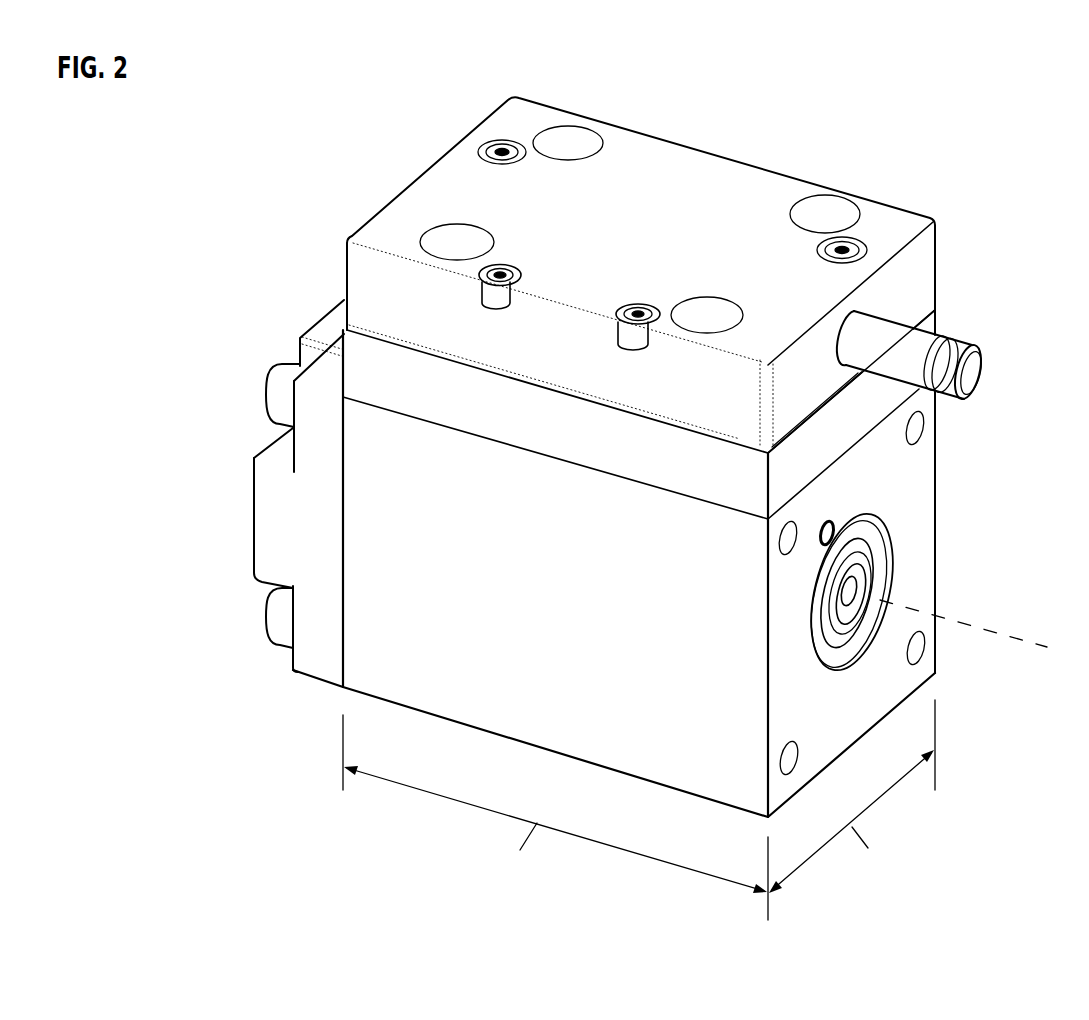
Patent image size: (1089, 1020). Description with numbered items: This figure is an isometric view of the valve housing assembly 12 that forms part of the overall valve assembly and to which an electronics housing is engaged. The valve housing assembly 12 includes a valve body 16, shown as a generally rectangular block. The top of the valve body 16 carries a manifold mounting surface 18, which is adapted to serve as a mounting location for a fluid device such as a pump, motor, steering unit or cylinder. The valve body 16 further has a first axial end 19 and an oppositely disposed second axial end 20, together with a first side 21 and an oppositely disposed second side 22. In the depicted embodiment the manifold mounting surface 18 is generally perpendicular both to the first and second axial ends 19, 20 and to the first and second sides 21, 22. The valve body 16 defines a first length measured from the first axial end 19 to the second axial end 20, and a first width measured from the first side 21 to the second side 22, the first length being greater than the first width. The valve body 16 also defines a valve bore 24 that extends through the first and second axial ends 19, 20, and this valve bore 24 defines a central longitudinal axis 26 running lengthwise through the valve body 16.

The valve housing assembly 12 is at (272, 143).
The valve body 16 is at (368, 670).
The manifold mounting surface 18 is at (837, 759).
The first axial end 19 is at (872, 706).
The second axial end 20 is at (342, 547).
The first side 21 is at (640, 718).
The second side 22 is at (940, 525).
The valve bore 24 is at (872, 532).
The central longitudinal axis 26 is at (957, 620).